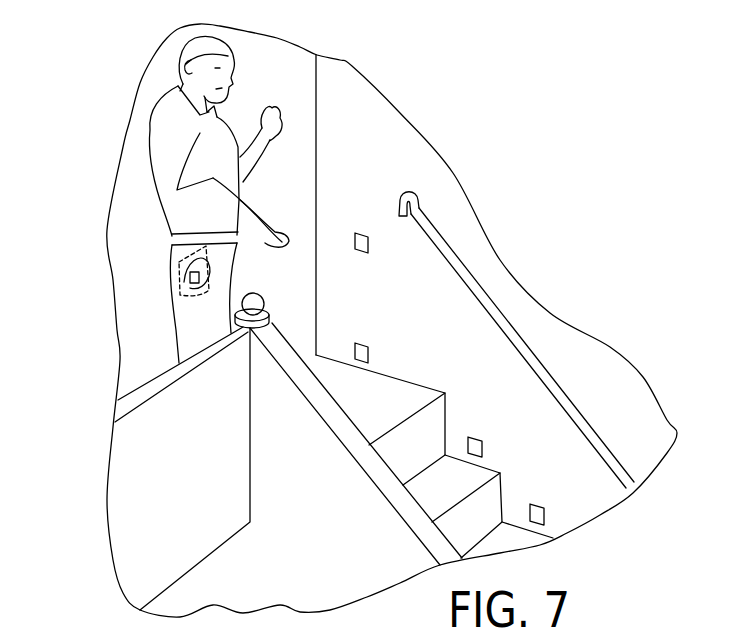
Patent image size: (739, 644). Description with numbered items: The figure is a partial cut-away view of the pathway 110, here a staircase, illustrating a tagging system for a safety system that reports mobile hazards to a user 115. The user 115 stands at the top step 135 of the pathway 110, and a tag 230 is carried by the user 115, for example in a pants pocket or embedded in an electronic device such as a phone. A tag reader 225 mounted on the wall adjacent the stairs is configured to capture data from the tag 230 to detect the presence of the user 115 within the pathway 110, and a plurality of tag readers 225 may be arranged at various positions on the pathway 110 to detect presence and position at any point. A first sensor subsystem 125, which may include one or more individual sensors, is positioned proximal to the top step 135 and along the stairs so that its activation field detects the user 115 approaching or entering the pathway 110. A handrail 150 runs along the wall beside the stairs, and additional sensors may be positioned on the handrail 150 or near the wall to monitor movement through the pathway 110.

The pathway 110 is at (570, 508).
The user 115 is at (158, 133).
The first sensor subsystem 125 is at (362, 352).
The top step 135 is at (385, 403).
The handrail 150 is at (470, 293).
The tag reader 225 is at (362, 242).
The tag 230 is at (185, 287).